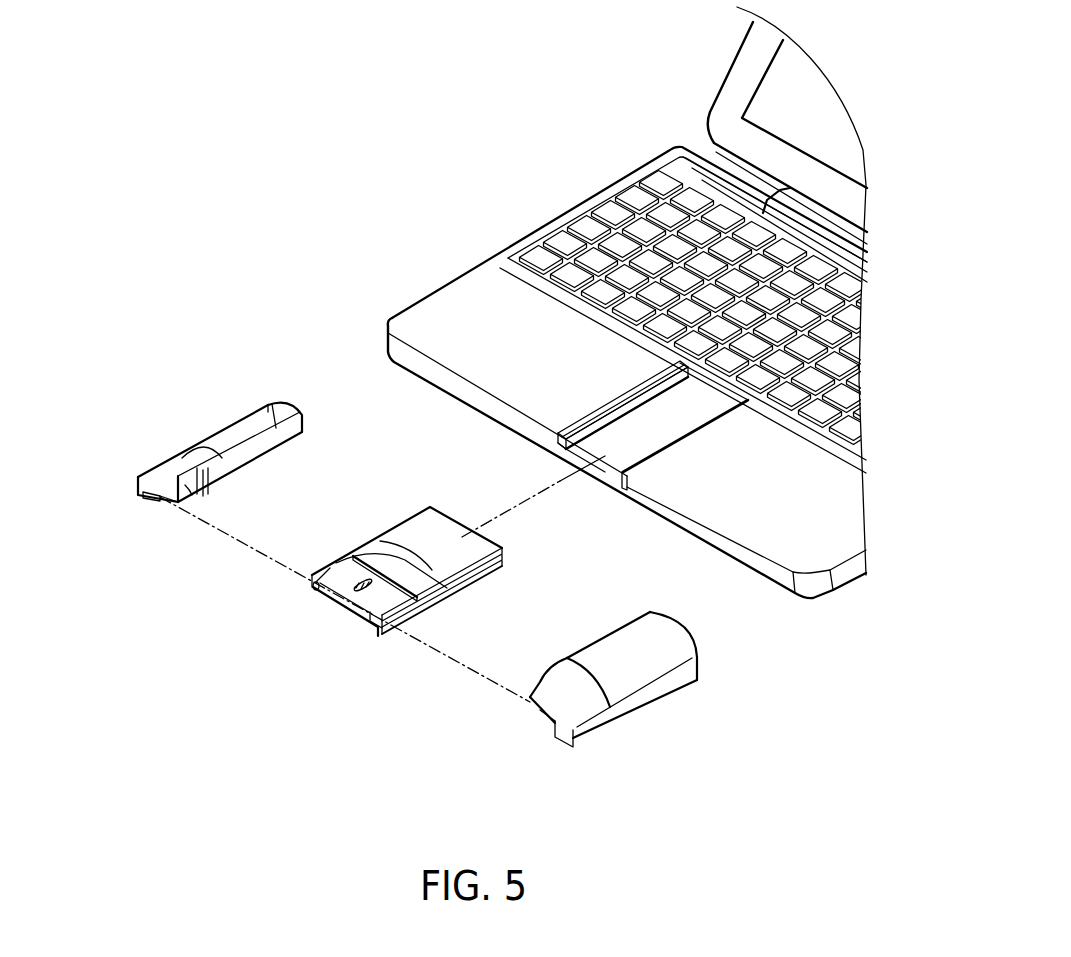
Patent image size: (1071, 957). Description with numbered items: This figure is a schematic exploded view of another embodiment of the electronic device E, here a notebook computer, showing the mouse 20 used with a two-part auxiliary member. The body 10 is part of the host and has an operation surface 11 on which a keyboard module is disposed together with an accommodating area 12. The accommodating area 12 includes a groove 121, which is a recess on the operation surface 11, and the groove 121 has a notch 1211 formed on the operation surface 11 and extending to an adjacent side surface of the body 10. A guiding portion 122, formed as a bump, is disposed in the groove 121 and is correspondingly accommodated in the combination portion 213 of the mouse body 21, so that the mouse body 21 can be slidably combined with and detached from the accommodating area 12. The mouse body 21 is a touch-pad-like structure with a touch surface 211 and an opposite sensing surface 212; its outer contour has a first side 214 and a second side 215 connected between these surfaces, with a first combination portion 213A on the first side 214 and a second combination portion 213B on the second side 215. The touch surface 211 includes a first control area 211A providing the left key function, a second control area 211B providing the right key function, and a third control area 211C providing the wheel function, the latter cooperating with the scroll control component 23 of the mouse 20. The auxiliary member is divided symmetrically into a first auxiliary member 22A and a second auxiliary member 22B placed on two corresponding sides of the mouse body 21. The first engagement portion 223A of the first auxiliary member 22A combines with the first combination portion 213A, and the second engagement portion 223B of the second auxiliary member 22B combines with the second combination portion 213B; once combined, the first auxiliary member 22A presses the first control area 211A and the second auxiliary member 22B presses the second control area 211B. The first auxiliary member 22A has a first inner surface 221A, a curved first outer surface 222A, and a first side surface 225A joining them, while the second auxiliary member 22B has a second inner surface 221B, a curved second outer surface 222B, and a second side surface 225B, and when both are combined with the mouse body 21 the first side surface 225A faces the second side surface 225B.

The electronic device E is at (636, 302).
The body 10 is at (636, 302).
The operation surface 11 is at (450, 350).
The accommodating area 12 is at (592, 452).
The groove 121 is at (665, 444).
The notch 1211 is at (640, 474).
The guiding portion 122 is at (545, 465).
The mouse 20 is at (364, 803).
The mouse body 21 is at (391, 606).
The touch surface 211 is at (313, 633).
The first control area 211A is at (364, 644).
The second control area 211B is at (314, 588).
The third control area 211C is at (352, 590).
The sensing surface 212 is at (500, 570).
The combination portion 213 is at (352, 532).
The first combination portion 213A is at (447, 587).
The second combination portion 213B is at (297, 555).
The first side 214 is at (473, 588).
The second side 215 is at (417, 522).
The first auxiliary member 22A is at (532, 691).
The first inner surface 221A is at (540, 718).
The first outer surface 222A is at (660, 673).
The first engagement portion 223A is at (586, 746).
The first side surface 225A is at (618, 622).
The second auxiliary member 22B is at (190, 498).
The second inner surface 221B is at (171, 524).
The second outer surface 222B is at (220, 438).
The second engagement portion 223B is at (142, 495).
The second side surface 225B is at (282, 430).
The scroll control component 23 is at (192, 457).